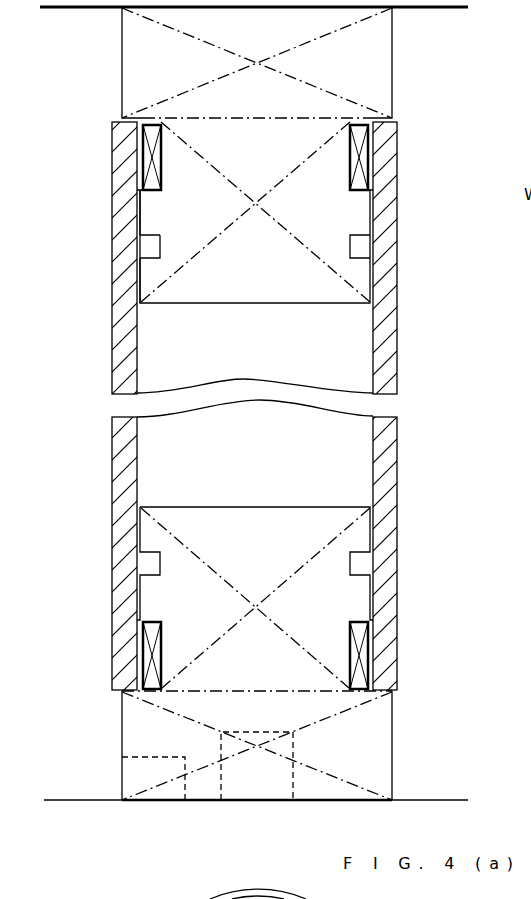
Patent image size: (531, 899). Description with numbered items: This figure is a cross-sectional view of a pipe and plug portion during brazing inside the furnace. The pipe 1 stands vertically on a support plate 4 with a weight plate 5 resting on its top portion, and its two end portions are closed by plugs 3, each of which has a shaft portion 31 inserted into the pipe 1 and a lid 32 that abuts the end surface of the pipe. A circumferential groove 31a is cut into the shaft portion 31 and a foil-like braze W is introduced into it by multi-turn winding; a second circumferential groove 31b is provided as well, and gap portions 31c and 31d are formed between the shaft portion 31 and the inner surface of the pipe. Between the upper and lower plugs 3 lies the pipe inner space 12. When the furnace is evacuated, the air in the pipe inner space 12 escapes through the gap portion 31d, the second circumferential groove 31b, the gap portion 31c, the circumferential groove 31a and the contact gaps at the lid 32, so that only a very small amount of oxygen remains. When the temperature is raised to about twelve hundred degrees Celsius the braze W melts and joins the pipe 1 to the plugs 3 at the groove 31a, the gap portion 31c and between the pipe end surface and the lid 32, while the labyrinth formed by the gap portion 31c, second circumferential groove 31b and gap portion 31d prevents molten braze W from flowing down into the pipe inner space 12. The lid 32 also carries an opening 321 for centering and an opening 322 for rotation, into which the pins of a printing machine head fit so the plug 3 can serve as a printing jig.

The pipe 1 is at (398, 262).
The plug 3 is at (219, 795).
The support plate 4 is at (452, 798).
The weight plate 5 is at (446, 9).
The pipe inner space 12 is at (268, 363).
The shaft portion 31 is at (215, 218).
The circumferential groove 31a is at (212, 163).
The second circumferential groove 31b is at (149, 248).
The gap portion 31c is at (140, 207).
The gap portion 31d is at (137, 297).
The lid 32 is at (267, 41).
The opening for centering 321 is at (263, 775).
The opening for rotation 322 is at (146, 768).
The braze W is at (156, 156).